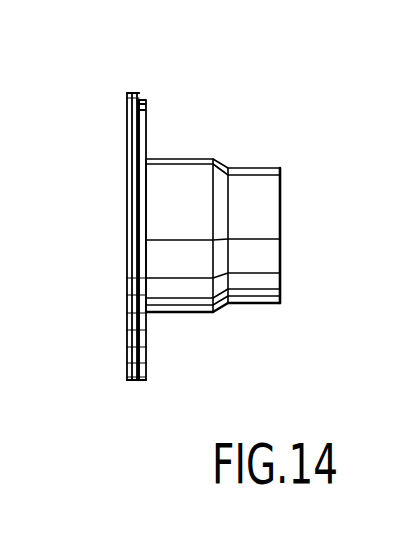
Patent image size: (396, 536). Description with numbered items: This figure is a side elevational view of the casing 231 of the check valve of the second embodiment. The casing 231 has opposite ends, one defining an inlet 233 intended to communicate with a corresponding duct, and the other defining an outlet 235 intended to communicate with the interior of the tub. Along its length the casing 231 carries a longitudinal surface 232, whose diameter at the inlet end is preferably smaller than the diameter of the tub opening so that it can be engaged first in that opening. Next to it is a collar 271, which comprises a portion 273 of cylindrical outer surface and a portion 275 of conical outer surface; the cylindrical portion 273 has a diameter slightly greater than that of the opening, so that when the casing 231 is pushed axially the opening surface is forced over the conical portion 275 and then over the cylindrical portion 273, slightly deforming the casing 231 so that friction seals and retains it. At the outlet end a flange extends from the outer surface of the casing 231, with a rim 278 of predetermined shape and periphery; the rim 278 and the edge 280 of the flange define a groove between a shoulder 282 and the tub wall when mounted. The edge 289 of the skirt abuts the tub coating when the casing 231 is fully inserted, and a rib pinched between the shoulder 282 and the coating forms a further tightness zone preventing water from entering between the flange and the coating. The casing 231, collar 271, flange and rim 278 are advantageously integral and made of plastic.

The casing 231 is at (254, 238).
The longitudinal surface 232 is at (273, 303).
The inlet 233 is at (283, 250).
The outlet 235 is at (129, 263).
The collar 271 is at (206, 358).
The portion of cylindrical outer surface 273 is at (186, 313).
The portion of conical outer surface 275 is at (239, 333).
The rim 278 is at (126, 106).
The edge 280 is at (146, 100).
The shoulder 282 is at (141, 95).
The edge of the skirt 289 is at (145, 378).